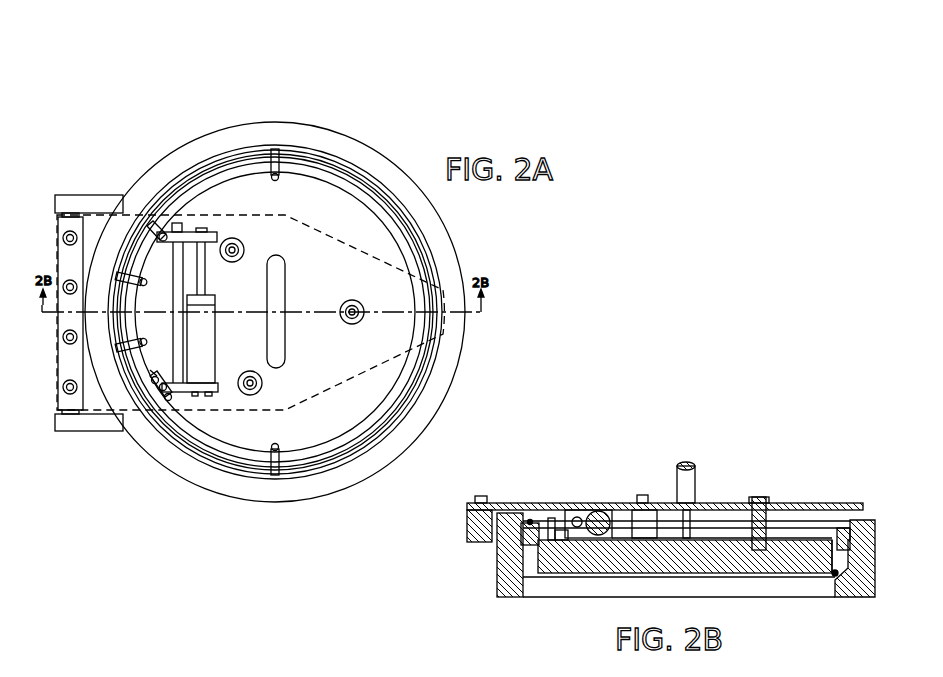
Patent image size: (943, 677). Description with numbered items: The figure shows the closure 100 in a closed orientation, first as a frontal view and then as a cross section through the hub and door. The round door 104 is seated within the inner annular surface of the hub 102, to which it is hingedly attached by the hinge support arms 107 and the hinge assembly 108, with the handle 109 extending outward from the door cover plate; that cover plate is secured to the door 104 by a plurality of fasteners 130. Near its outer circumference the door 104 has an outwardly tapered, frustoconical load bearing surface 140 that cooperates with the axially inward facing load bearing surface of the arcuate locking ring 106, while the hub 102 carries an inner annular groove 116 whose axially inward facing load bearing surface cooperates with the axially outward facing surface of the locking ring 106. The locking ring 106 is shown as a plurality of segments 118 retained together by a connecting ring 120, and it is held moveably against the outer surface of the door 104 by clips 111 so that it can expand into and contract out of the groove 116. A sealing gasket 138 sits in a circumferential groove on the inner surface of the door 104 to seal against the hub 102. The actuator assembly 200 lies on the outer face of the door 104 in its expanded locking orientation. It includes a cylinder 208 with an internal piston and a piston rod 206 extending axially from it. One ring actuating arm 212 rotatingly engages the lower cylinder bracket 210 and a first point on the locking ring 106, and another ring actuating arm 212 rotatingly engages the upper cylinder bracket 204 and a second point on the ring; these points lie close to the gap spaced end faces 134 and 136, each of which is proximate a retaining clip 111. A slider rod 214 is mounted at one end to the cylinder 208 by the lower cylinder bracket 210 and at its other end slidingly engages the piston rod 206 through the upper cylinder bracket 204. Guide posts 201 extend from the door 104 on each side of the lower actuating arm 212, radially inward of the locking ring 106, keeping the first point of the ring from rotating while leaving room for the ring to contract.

In FIG. 2A, the closure 100 is at (340, 196).
In FIG. 2A, the hub 102 is at (443, 217).
In FIG. 2B, the hub 102 is at (497, 588).
In FIG. 2A, the door 104 is at (363, 227).
In FIG. 2B, the door 104 is at (780, 540).
In FIG. 2A, the locking ring 106 is at (212, 460).
In FIG. 2B, the locking ring 106 is at (858, 520).
In FIG. 2A, the hinge support arms 107 is at (93, 202).
In FIG. 2B, the hinge support arms 107 is at (467, 537).
In FIG. 2A, the hinge assembly 108 is at (53, 194).
In FIG. 2B, the hinge assembly 108 is at (458, 514).
In FIG. 2B, the handle 109 is at (688, 463).
In FIG. 2A, the clips 111 is at (270, 150).
In FIG. 2B, the groove 116 is at (855, 542).
In FIG. 2A, the segments 118 is at (155, 192).
In FIG. 2B, the connecting ring 120 is at (842, 530).
In FIG. 2A, the fasteners 130 is at (363, 320).
In FIG. 2B, the fasteners 130 is at (760, 496).
In FIG. 2A, the end face 134 is at (125, 293).
In FIG. 2A, the end face 136 is at (122, 332).
In FIG. 2B, the sealing gasket 138 is at (836, 575).
In FIG. 2B, the load bearing surface 140 is at (533, 533).
In FIG. 2A, the actuator assembly 200 is at (226, 284).
In FIG. 2A, the guide posts 201 is at (150, 370).
In FIG. 2A, the upper cylinder bracket 204 is at (212, 230).
In FIG. 2B, the upper cylinder bracket 204 is at (607, 510).
In FIG. 2A, the piston rod 206 is at (240, 240).
In FIG. 2A, the cylinder 208 is at (202, 360).
In FIG. 2B, the cylinder 208 is at (598, 510).
In FIG. 2A, the lower cylinder bracket 210 is at (197, 395).
In FIG. 2A, the ring actuating arm 212 is at (145, 230).
In FIG. 2B, the ring actuating arm 212 is at (562, 520).
In FIG. 2A, the slider rod 214 is at (178, 330).
In FIG. 2B, the slider rod 214 is at (578, 513).